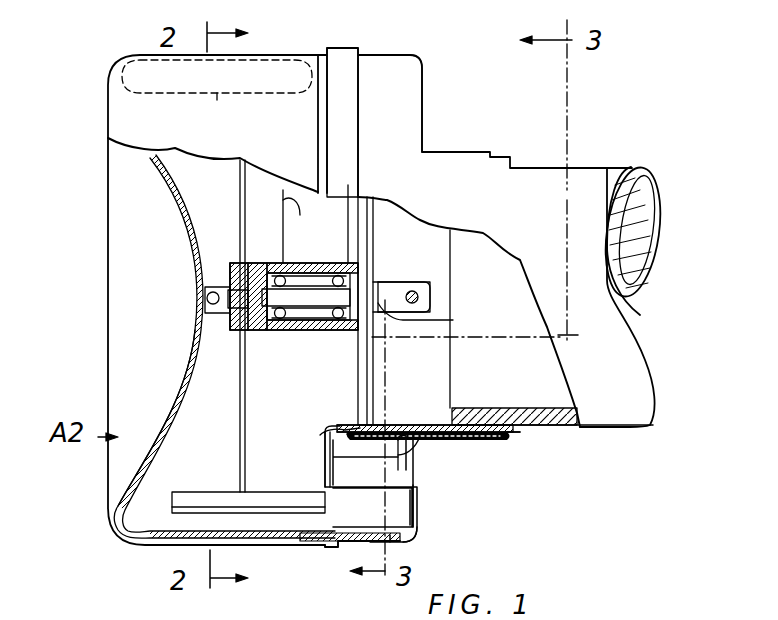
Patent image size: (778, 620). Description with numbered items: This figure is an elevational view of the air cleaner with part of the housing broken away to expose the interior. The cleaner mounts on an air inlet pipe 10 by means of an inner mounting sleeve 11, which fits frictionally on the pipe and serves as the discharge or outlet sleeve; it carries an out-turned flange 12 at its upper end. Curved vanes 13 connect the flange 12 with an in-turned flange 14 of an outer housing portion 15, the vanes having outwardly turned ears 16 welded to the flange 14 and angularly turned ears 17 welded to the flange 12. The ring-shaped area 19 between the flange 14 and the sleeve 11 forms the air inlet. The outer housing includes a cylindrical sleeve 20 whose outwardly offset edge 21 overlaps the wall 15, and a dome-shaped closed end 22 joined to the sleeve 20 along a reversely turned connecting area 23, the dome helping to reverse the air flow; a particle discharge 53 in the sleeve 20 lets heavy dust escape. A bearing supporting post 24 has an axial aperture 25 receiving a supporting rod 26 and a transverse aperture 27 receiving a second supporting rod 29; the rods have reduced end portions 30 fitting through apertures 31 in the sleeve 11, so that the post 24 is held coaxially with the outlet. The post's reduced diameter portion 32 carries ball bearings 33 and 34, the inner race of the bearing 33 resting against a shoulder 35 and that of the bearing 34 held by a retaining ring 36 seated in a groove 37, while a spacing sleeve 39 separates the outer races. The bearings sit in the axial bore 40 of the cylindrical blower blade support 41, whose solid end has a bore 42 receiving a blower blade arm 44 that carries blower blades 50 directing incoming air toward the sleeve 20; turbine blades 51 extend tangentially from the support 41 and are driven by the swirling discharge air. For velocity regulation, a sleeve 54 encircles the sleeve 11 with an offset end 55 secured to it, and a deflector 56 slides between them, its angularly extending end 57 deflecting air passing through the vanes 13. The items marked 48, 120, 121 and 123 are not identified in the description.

The air inlet pipe 10 is at (612, 420).
The inner mounting sleeve 11 is at (437, 408).
The out-turned flange 12 is at (325, 450).
The curved vanes 13 is at (362, 485).
The in-turned flange 14 is at (420, 522).
The outer housing portion 15 is at (395, 545).
The outwardly turned ears 16 is at (418, 500).
The angularly turned ears 17 is at (325, 462).
The ring-shaped area 19 is at (408, 468).
The cylindrical sleeve 20 is at (280, 547).
The outwardly offset edge 21 is at (335, 550).
The closed end 22 is at (194, 338).
The reversely turned connecting area 23 is at (120, 520).
The bearing supporting post 24 is at (412, 280).
The aperture 25 is at (432, 300).
The supporting rod 26 is at (418, 295).
The aperture 27 is at (453, 320).
The supporting rod 29 is at (368, 388).
The end portions 30 is at (330, 428).
The apertures 31 is at (378, 425).
The reduced diameter portion 32 is at (320, 300).
The ball bearing 33 is at (345, 182).
The ball bearing 34 is at (283, 297).
The shoulder 35 is at (373, 282).
The retaining ring 36 is at (265, 277).
The groove 37 is at (313, 268).
The spacing sleeve 39 is at (303, 330).
The axial bore 40 is at (262, 330).
The cylindrical blower blade support 41 is at (230, 285).
The bore 42 is at (225, 350).
The blower blade arm 44 is at (257, 177).
The ball end of shaft 48 is at (205, 300).
The blower blades 50 is at (195, 270).
The turbine blades 51 is at (322, 193).
The particle discharge 53 is at (217, 100).
The sleeve 54 is at (480, 440).
The offset end 55 is at (512, 436).
The deflector 56 is at (455, 432).
The angularly extending end 57 is at (440, 450).
The element 120 is at (90, 618).
The element 121 is at (148, 612).
The element 123 is at (112, 618).